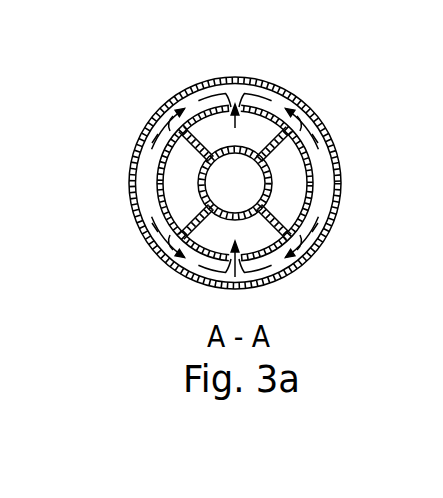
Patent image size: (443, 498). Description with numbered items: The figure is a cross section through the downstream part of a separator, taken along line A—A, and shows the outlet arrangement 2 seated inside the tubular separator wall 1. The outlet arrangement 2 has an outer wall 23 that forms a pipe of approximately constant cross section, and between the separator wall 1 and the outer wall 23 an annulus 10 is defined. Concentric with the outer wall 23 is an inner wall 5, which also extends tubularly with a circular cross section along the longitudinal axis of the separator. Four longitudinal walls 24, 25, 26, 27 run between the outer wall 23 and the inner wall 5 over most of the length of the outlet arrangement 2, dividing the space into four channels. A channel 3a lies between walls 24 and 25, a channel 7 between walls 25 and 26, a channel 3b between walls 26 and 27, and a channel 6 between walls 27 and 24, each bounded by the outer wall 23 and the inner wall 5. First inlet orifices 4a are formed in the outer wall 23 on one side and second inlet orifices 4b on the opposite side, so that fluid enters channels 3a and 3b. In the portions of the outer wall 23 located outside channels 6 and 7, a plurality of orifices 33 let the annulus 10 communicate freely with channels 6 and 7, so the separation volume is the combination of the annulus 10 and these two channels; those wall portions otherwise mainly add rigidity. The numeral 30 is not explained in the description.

The separator wall 1 is at (161, 107).
The outlet arrangement 2 is at (156, 161).
The channel 3a is at (265, 110).
The channel 3b is at (270, 250).
The first inlet orifices 4a is at (250, 130).
The second inlet orifices 4b is at (253, 237).
The inner wall 5 is at (272, 176).
The channel 6 is at (175, 198).
The channel 7 is at (297, 198).
The annulus 10 is at (183, 275).
The outer wall 23 is at (218, 105).
The longitudinal wall 24 is at (197, 143).
The longitudinal wall 25 is at (290, 131).
The longitudinal wall 26 is at (300, 240).
The longitudinal wall 27 is at (157, 228).
The flow direction 30 is at (404, 134).
The orifices 33 is at (152, 122).